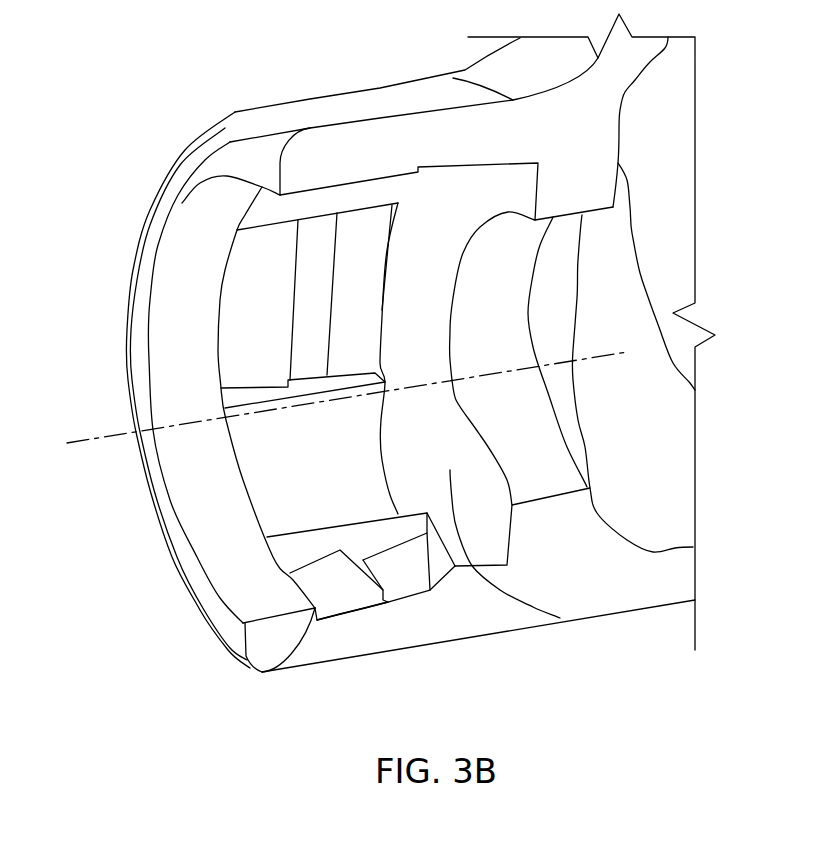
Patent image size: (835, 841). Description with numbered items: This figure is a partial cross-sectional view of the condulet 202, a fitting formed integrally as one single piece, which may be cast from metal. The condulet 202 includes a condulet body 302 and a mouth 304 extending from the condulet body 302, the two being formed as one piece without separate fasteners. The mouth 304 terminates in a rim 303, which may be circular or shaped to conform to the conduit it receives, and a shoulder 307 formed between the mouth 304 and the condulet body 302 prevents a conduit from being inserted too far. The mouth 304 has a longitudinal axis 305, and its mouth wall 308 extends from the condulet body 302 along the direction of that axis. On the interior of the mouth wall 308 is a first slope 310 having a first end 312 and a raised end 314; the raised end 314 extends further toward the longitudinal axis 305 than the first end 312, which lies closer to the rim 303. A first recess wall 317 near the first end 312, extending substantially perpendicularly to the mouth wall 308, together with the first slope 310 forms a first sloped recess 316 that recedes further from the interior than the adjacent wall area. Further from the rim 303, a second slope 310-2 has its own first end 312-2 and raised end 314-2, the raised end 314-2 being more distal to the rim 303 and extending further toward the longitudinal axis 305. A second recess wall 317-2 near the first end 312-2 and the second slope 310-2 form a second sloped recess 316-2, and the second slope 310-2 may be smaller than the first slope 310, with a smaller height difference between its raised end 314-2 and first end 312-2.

The condulet 202 is at (133, 114).
The condulet body 302 is at (667, 453).
The rim 303 is at (213, 590).
The mouth 304 is at (345, 145).
The longitudinal axis 305 is at (108, 443).
The shoulder 307 is at (508, 338).
The mouth wall 308 is at (160, 223).
The first slope 310 is at (353, 593).
The second slope 310-2 is at (437, 585).
The first end 312 is at (327, 623).
The first end 312-2 is at (418, 597).
The raised end 314 is at (372, 595).
The raised end 314-2 is at (460, 580).
The first sloped recess 316 is at (333, 583).
The second sloped recess 316-2 is at (403, 580).
The first recess wall 317 is at (263, 673).
The second recess wall 317-2 is at (362, 565).